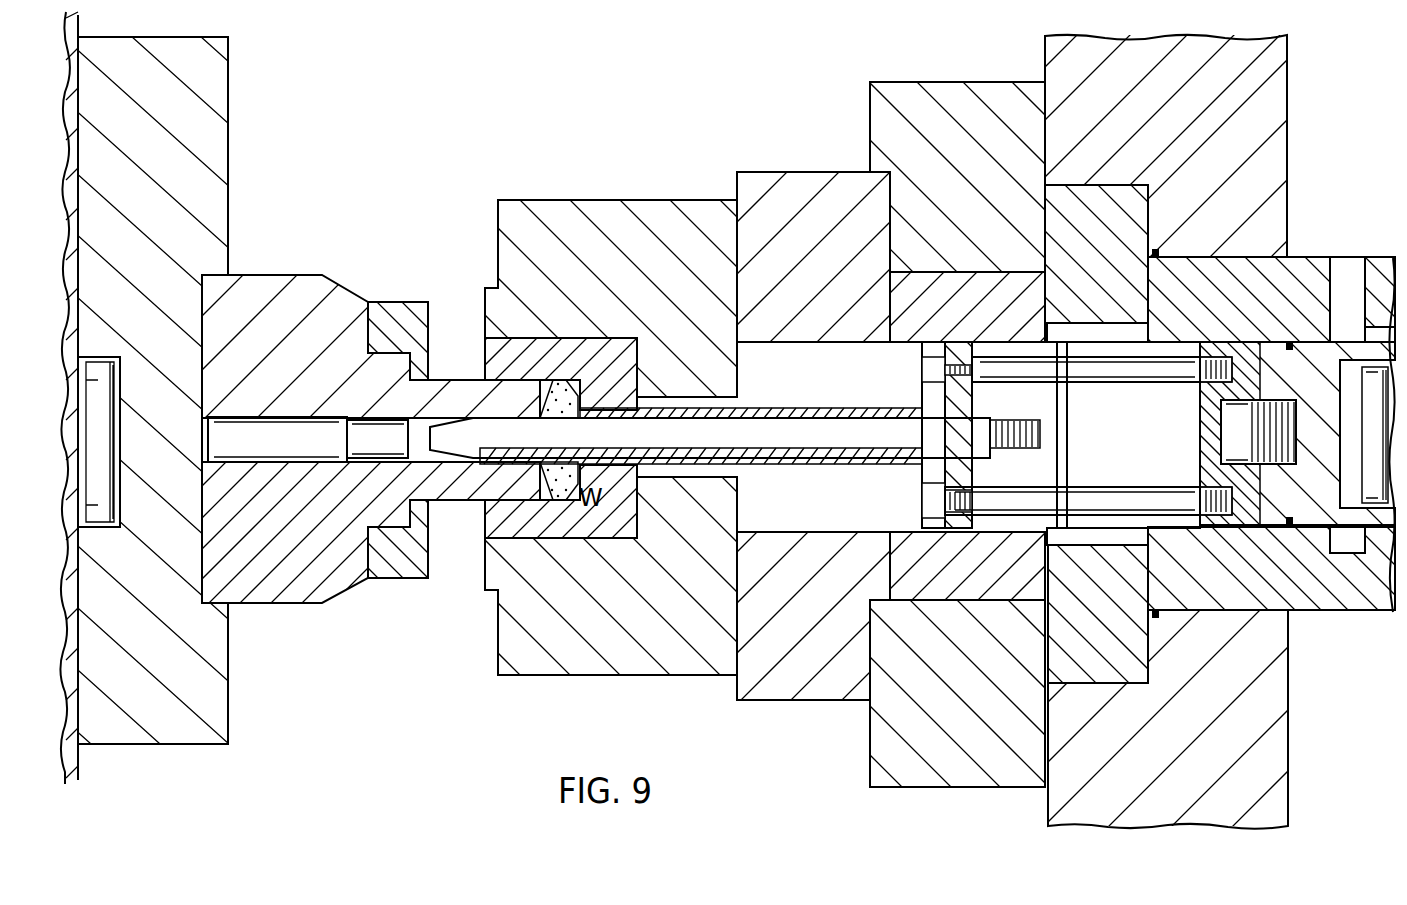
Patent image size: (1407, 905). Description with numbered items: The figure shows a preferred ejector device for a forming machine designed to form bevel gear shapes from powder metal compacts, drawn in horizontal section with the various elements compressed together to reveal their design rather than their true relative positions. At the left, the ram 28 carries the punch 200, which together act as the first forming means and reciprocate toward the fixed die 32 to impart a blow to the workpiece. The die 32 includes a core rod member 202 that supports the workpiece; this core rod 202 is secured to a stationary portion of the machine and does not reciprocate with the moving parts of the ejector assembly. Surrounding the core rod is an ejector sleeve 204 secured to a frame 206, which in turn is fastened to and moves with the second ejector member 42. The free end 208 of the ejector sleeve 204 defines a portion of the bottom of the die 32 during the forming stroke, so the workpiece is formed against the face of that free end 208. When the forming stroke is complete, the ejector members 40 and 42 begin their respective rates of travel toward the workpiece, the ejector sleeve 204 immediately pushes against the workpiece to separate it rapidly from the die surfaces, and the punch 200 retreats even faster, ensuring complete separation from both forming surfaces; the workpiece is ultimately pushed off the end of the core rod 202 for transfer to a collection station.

The ram 28 is at (218, 207).
The die 32 is at (488, 352).
The ejector member 40 is at (1372, 462).
The second ejector member 42 is at (1268, 523).
The punch 200 is at (468, 492).
The core rod member 202 is at (800, 440).
The ejector sleeve 204 is at (800, 408).
The frame 206 is at (978, 484).
The free end of the ejector sleeve 208 is at (566, 396).